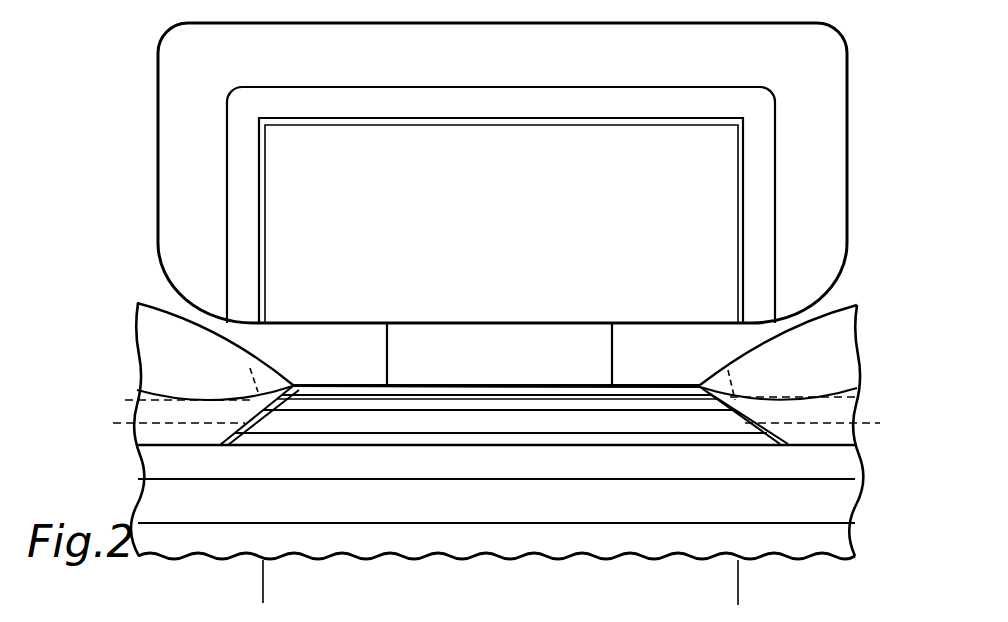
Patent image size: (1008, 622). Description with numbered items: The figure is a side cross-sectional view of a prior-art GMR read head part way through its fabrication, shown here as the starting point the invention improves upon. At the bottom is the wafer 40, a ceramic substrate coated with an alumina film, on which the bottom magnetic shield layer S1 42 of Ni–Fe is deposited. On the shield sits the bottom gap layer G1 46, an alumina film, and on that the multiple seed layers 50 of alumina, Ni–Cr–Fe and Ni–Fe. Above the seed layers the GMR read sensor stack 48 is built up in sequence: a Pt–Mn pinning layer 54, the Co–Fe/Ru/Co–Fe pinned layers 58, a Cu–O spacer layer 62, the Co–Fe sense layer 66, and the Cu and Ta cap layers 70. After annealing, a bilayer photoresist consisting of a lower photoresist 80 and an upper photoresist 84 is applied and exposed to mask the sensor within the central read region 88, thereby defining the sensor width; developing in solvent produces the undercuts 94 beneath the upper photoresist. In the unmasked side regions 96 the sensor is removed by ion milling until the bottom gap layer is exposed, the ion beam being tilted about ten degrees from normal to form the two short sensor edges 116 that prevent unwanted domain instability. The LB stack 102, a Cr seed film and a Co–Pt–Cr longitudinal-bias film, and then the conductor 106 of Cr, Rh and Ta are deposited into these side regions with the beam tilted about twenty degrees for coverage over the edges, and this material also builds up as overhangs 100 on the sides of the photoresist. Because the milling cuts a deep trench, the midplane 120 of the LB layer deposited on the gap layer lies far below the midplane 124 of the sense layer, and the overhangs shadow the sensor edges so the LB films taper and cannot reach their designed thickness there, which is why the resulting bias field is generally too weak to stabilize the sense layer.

The wafer 40 is at (623, 554).
The bottom magnetic shield layer 42 is at (586, 514).
The bottom gap layer 46 is at (343, 462).
The sensor stack 48 is at (340, 377).
The multiple seed layers 50 is at (620, 443).
The pinning layer 54 is at (432, 420).
The pinned layers 58 is at (458, 410).
The spacer layer 62 is at (493, 405).
The sense layer 66 is at (543, 398).
The cap layers 70 is at (653, 388).
The lower photoresist 80 is at (440, 361).
The upper photoresist 84 is at (512, 270).
The read region 88 is at (736, 587).
The undercuts 94 is at (374, 361).
The unmasked side regions 96 is at (261, 587).
The overhangs 100 is at (522, 66).
The LB stack 102 is at (185, 412).
The conductor 106 is at (195, 356).
The short sensor edges 116 is at (227, 403).
The midplane of the LB layer 120 is at (135, 424).
The midplane of the sense layer 124 is at (496, 371).
The bottom gap layer G1 is at (447, 498).
The bottom magnetic shield layer S1 is at (521, 514).